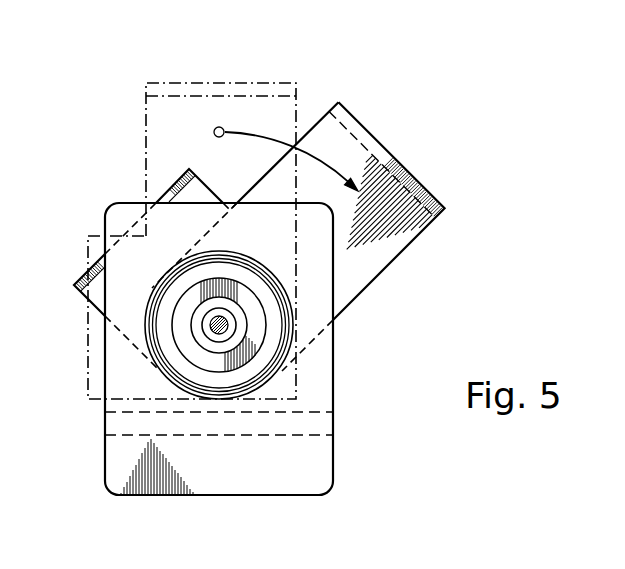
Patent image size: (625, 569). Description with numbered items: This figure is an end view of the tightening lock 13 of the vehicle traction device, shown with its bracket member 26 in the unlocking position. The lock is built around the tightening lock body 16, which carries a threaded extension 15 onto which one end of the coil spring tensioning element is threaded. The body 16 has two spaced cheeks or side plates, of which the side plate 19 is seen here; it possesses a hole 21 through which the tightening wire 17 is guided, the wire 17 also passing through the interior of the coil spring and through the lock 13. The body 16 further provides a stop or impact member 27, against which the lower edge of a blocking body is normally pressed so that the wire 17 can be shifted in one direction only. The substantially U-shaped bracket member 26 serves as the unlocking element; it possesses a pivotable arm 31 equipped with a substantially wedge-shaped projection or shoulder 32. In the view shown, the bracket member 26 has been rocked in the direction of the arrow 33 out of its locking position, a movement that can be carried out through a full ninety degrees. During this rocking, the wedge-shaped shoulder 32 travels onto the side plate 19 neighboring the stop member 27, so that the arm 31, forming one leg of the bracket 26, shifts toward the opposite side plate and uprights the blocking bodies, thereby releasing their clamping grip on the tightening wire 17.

The tightening lock 13 is at (340, 484).
The threaded extension 15 is at (211, 258).
The tightening lock body 16 is at (216, 477).
The tightening wire 17 is at (222, 320).
The side plate 19 is at (136, 203).
The hole 21 is at (211, 323).
The bracket member 26 is at (300, 103).
The stop member 27 is at (302, 417).
The pivotable arm 31 is at (155, 110).
The wedge-shaped projection 32 is at (178, 181).
The arrow 33 is at (270, 141).